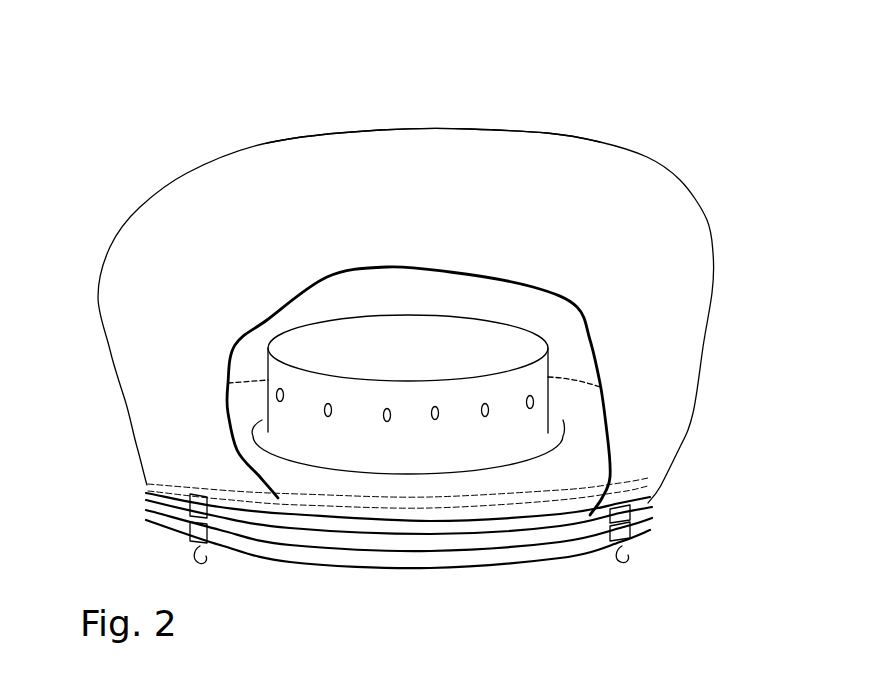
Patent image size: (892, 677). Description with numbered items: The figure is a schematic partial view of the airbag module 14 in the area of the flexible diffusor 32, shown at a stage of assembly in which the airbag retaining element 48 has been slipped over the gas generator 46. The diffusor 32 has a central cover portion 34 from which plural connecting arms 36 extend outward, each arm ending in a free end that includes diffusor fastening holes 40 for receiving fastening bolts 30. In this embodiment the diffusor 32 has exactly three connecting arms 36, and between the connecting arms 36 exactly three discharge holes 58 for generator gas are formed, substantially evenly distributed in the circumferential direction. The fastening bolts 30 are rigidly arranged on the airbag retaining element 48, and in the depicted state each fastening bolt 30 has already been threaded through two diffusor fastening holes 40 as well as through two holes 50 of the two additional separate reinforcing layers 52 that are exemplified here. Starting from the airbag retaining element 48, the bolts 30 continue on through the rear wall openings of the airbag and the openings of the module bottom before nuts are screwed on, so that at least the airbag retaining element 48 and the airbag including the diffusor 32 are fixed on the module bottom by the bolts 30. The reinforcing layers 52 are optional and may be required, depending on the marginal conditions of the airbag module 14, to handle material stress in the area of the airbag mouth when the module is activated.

The airbag module 14 is at (193, 125).
The fastening bolts 30 is at (197, 557).
The flexible diffusor 32 is at (705, 138).
The central cover portion 34 is at (421, 200).
The connecting arms 36 is at (452, 533).
The diffusor fastening holes 40 is at (185, 492).
The gas generator 46 is at (428, 367).
The airbag retaining element 48 is at (348, 485).
The holes 50 is at (182, 526).
The reinforcing layers 52 is at (640, 497).
The discharge holes 58 is at (567, 357).